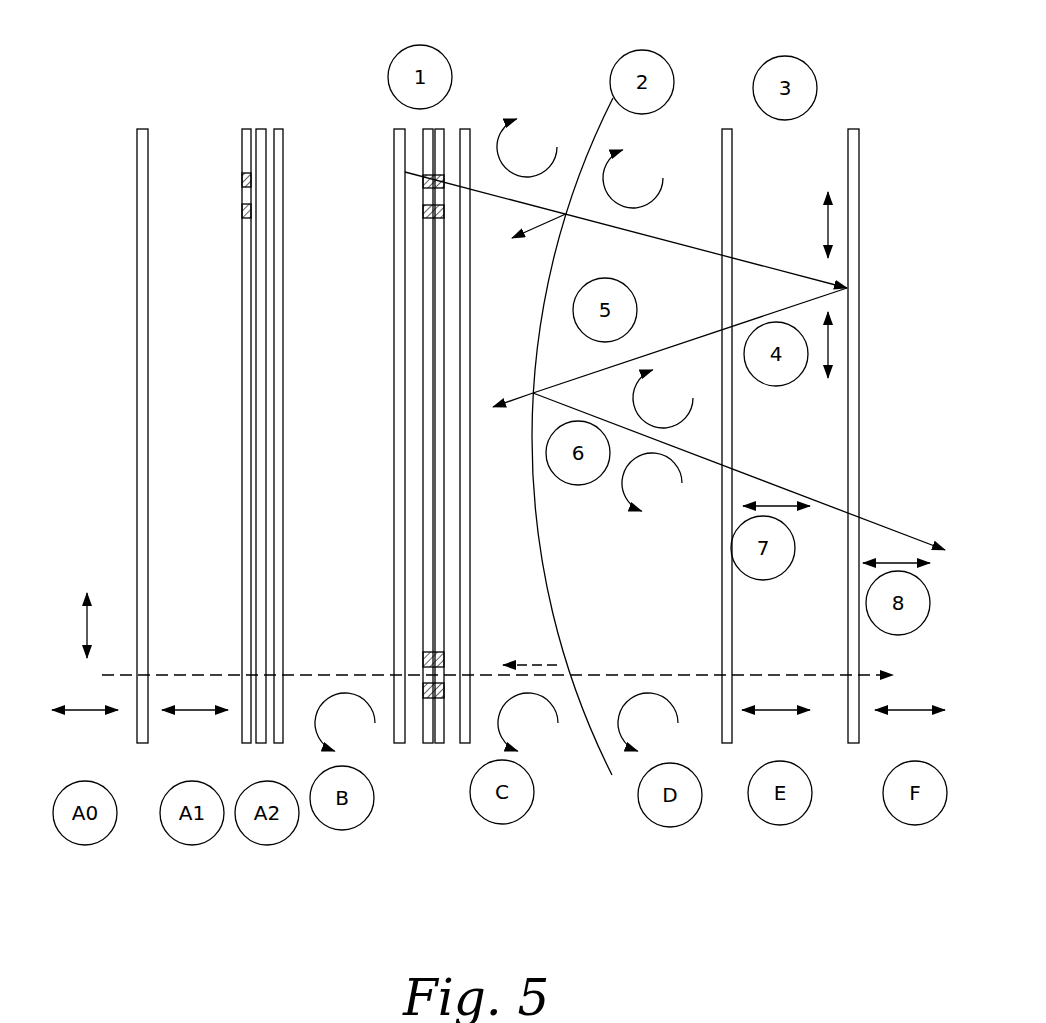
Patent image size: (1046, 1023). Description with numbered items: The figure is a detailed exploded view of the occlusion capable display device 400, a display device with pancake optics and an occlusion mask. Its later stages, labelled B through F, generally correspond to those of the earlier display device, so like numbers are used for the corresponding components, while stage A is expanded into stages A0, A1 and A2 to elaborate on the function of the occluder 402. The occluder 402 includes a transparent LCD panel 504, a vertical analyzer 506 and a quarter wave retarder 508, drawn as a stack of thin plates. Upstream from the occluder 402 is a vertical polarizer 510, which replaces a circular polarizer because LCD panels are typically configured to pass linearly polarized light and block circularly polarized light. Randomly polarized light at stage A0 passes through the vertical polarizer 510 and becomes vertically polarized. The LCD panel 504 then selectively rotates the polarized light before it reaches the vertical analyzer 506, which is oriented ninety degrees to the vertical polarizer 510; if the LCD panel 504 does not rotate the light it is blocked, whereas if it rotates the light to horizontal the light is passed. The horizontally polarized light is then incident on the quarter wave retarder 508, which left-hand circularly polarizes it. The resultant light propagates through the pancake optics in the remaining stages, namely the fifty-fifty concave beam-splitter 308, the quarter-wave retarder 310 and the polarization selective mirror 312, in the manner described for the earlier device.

The occlusion capable display device 400 is at (152, 97).
The occluder 402 is at (297, 112).
The vertical polarizer 510 is at (136, 157).
The transparent LCD panel 504 is at (241, 157).
The vertical analyzer 506 is at (268, 214).
The quarter wave retarder 508 is at (285, 158).
The 50/50 concave beam-splitter 308 is at (553, 622).
The quarter-wave retarder 310 is at (732, 179).
The polarization selective mirror 312 is at (859, 179).